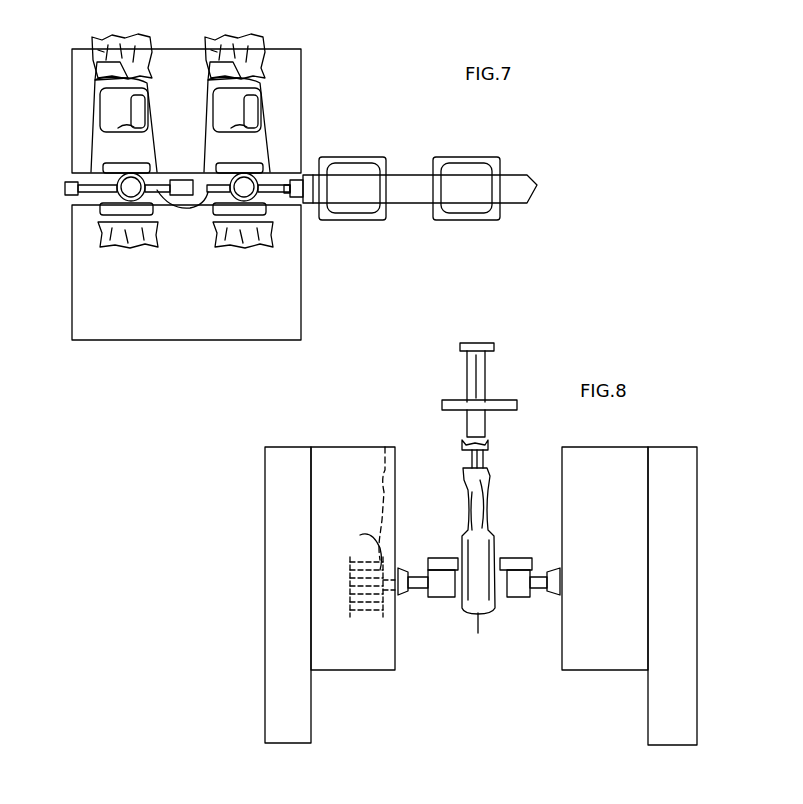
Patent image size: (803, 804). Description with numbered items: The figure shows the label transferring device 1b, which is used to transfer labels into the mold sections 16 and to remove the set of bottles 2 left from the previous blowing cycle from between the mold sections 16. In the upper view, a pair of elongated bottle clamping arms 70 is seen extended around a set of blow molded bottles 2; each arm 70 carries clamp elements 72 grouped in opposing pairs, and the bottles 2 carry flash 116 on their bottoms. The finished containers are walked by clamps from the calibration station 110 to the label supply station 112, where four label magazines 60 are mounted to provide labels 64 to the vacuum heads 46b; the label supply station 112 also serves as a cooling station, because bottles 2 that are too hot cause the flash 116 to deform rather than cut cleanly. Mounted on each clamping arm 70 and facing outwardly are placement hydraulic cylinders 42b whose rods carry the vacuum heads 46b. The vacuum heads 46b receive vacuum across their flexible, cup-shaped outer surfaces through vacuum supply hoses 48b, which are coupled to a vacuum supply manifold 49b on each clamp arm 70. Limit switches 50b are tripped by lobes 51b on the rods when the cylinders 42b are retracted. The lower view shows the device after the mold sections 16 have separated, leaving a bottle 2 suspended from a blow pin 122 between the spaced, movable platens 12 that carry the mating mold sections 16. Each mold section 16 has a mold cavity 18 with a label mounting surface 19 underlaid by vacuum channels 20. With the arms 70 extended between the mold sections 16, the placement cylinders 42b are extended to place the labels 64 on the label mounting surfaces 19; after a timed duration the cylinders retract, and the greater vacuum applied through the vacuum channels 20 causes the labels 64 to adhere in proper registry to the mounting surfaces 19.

In FIG. 7, the label transferring device 1b is at (360, 112).
In FIG. 8, the label transferring device 1b is at (505, 668).
In FIG. 7, the bottle 2 is at (97, 118).
In FIG. 8, the bottle 2 is at (480, 512).
In FIG. 8, the platen 12 is at (268, 546).
In FIG. 7, the mold section 16 is at (247, 330).
In FIG. 8, the mold section 16 is at (345, 670).
In FIG. 8, the mold cavity 18 is at (388, 483).
In FIG. 8, the label mounting surface 19 is at (359, 545).
In FIG. 8, the vacuum channel 20 is at (350, 590).
In FIG. 8, the placement hydraulic cylinder 42b is at (445, 600).
In FIG. 7, the vacuum head 46b is at (142, 174).
In FIG. 8, the vacuum head 46b is at (403, 596).
In FIG. 7, the vacuum supply hose 48b is at (180, 208).
In FIG. 7, the vacuum supply manifold 49b is at (185, 178).
In FIG. 7, the limit switch 50b is at (65, 188).
In FIG. 7, the lobe 51b is at (77, 232).
In FIG. 7, the label magazine 60 is at (338, 157).
In FIG. 7, the label 64 is at (362, 208).
In FIG. 7, the bottle clamping arm 70 is at (393, 175).
In FIG. 8, the bottle clamping arm 70 is at (430, 560).
In FIG. 7, the clamp element 72 is at (290, 197).
In FIG. 8, the clamp element 72 is at (440, 558).
In FIG. 7, the calibration station 110 is at (112, 355).
In FIG. 7, the label supply station 112 is at (385, 253).
In FIG. 7, the flash 116 is at (135, 37).
In FIG. 8, the flash 116 is at (482, 458).
In FIG. 8, the blow pin 122 is at (478, 418).